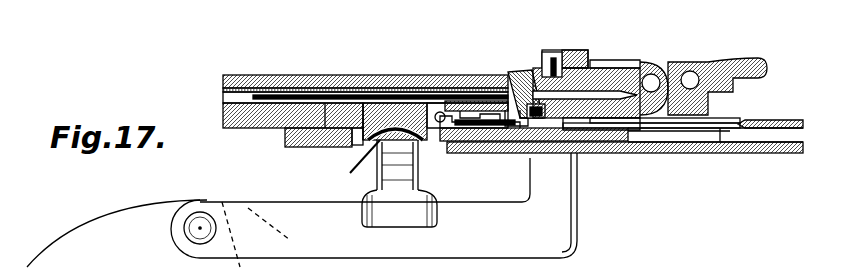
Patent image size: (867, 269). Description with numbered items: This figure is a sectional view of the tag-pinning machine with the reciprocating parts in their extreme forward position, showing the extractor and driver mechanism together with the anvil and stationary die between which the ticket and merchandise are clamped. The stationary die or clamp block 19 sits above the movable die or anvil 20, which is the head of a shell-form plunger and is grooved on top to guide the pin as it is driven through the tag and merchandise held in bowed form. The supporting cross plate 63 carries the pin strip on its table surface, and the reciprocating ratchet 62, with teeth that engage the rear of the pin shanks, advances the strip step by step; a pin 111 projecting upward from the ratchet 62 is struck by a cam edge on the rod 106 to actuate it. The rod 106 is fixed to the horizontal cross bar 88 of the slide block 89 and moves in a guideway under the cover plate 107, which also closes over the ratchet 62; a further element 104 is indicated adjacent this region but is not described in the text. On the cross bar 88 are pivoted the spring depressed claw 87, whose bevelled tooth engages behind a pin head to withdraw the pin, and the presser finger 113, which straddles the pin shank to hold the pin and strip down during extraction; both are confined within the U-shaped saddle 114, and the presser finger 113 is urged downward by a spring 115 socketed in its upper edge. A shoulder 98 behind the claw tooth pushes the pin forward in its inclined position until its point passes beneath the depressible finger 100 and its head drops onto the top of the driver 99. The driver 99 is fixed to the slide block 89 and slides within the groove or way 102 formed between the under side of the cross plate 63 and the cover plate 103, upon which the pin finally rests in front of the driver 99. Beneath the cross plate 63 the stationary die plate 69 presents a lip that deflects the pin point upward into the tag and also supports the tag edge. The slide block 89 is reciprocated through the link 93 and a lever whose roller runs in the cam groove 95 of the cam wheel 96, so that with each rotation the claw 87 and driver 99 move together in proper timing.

The cover plate 107 is at (250, 76).
The rod 106 is at (340, 88).
The stationary die or clamp block 19 is at (392, 102).
The pin 104 is at (440, 112).
The pin 111 is at (473, 100).
The reciprocating ratchet 62 is at (502, 82).
The presser finger 113 is at (520, 110).
The shoulder 98 is at (535, 108).
The spring 115 is at (547, 52).
The saddle 114 is at (583, 50).
The slide block 89 is at (608, 66).
The horizontal cross bar 88 is at (667, 83).
The spring depressed claw 87 is at (706, 112).
The cam wheel 96 is at (735, 122).
The supporting cross plate 63 is at (780, 119).
The groove or way 102 is at (758, 132).
The driver 99 is at (625, 145).
The cover plate 103 is at (665, 154).
The stationary die plate 69 is at (327, 142).
The movable die or anvil 20 is at (407, 178).
The depressible finger 100 is at (467, 122).
The link 93 is at (388, 205).
The cam groove 95 is at (123, 268).